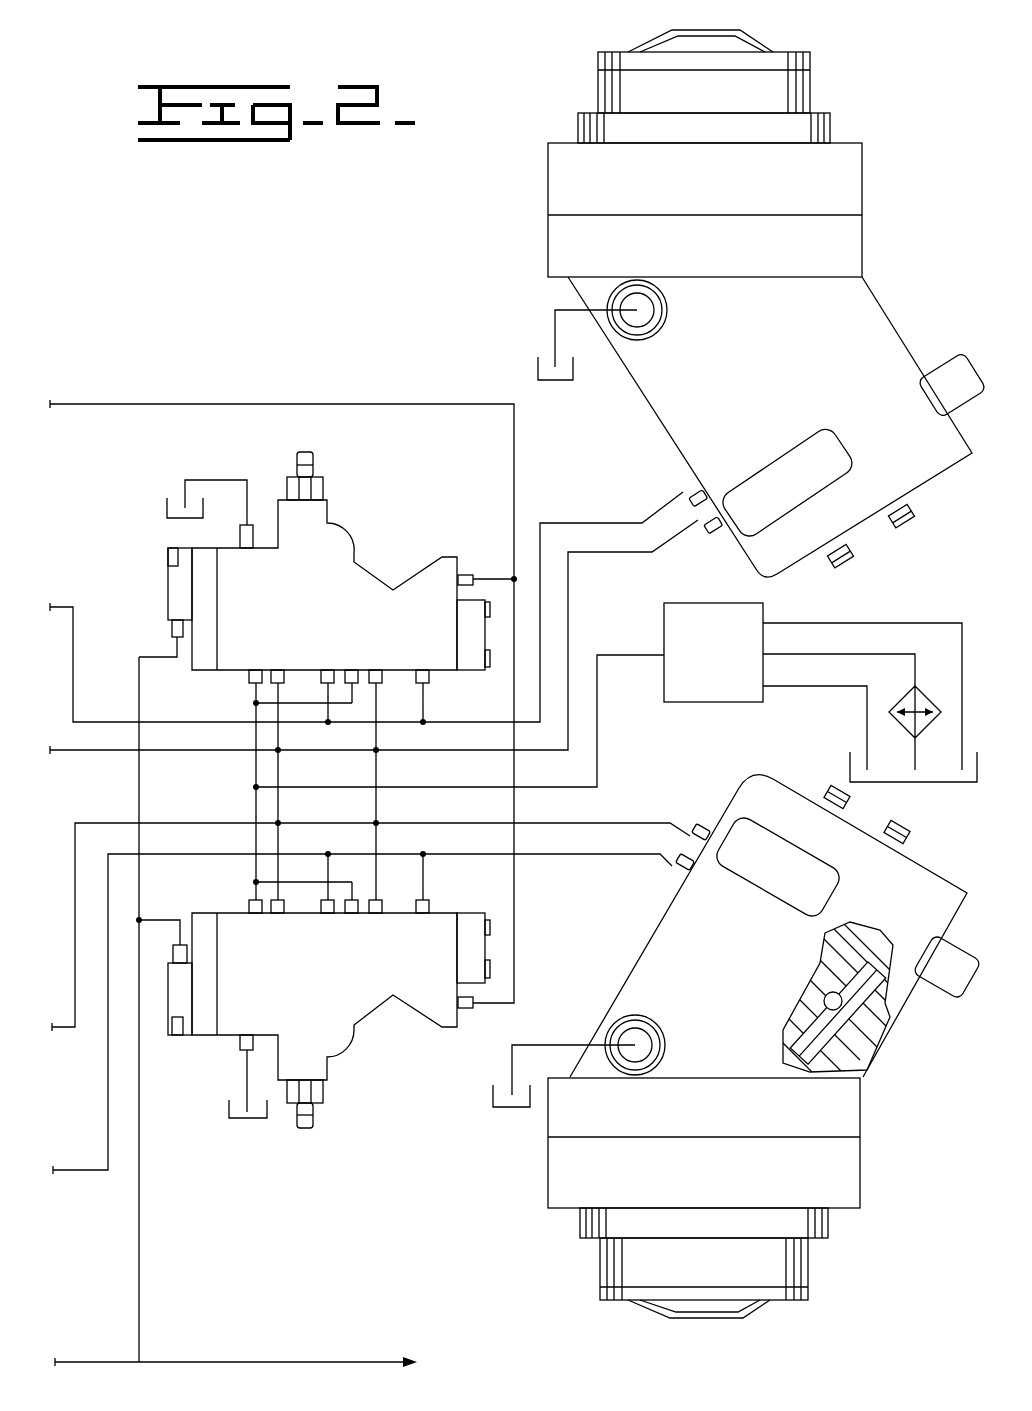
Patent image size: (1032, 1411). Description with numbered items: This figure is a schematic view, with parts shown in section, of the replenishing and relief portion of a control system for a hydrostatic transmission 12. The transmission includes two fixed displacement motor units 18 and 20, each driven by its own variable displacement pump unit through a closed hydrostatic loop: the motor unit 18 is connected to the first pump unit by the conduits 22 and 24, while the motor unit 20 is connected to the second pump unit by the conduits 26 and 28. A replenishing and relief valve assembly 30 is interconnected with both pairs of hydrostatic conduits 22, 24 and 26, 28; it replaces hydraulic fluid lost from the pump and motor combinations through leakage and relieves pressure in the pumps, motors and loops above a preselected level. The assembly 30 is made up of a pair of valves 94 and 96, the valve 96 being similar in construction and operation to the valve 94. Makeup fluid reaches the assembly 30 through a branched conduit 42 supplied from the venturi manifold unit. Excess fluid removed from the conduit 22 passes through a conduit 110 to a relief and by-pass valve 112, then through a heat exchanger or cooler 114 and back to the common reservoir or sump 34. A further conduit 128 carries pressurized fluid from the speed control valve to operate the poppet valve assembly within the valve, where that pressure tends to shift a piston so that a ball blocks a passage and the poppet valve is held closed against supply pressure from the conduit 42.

The hydrostatic transmission 12 is at (390, 333).
The motor unit 18 is at (763, 390).
The motor unit 20 is at (738, 990).
The conduit 22 is at (233, 749).
The conduit 24 is at (202, 722).
The conduit 26 is at (75, 936).
The conduit 28 is at (108, 1126).
The replenishing and relief valve assembly 30 is at (444, 436).
The reservoir or sump 34 is at (912, 782).
The branched conduit 42 is at (268, 404).
The valve 94 is at (332, 630).
The valve 96 is at (344, 980).
The conduit 110 is at (598, 717).
The relief and by-pass valve 112 is at (763, 605).
The heat exchanger or cooler 114 is at (913, 685).
The conduit 128 is at (141, 1180).